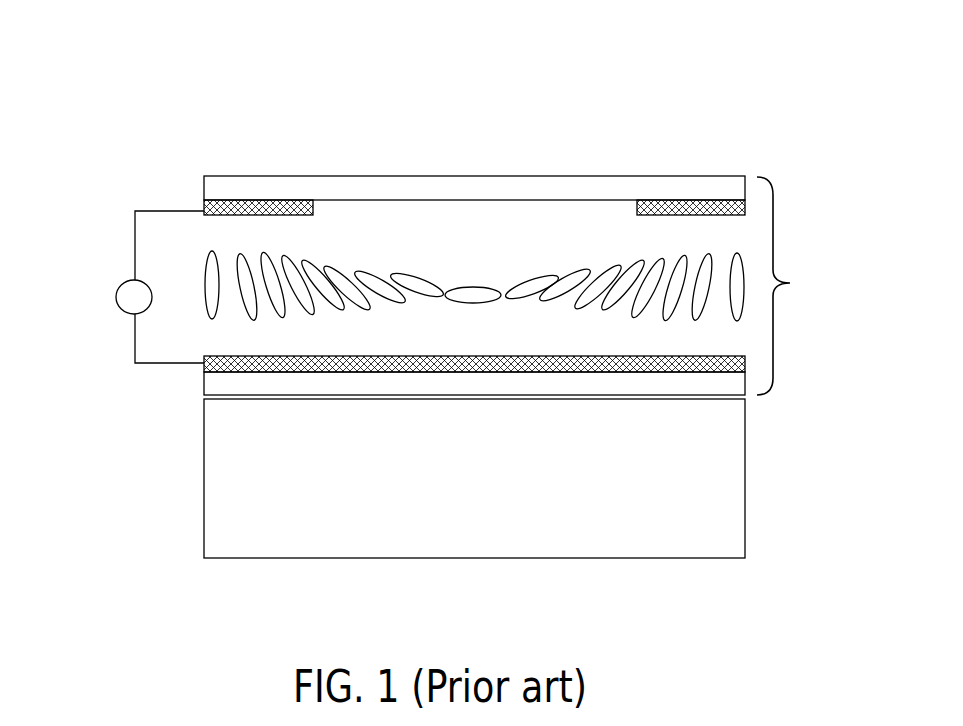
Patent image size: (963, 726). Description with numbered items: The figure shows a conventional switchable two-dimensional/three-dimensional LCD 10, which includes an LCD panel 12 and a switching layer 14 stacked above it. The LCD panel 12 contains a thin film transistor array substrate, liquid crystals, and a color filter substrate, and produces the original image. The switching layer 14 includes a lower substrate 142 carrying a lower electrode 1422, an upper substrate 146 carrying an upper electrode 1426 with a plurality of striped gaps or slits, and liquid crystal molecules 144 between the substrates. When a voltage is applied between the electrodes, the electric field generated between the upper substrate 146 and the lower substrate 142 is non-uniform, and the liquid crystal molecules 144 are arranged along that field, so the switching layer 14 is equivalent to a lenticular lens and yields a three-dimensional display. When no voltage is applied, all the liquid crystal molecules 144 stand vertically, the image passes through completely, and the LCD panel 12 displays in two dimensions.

The switchable 2D/3D LCD 10 is at (41, 45).
The LCD panel 12 is at (204, 492).
The switching 2D/3D layer 14 is at (440, 293).
The lower substrate 142 is at (204, 387).
The lower electrode 1422 is at (345, 355).
The liquid crystal molecules 144 is at (243, 302).
The upper substrate 146 is at (204, 183).
The upper electrodes 1426 is at (292, 217).